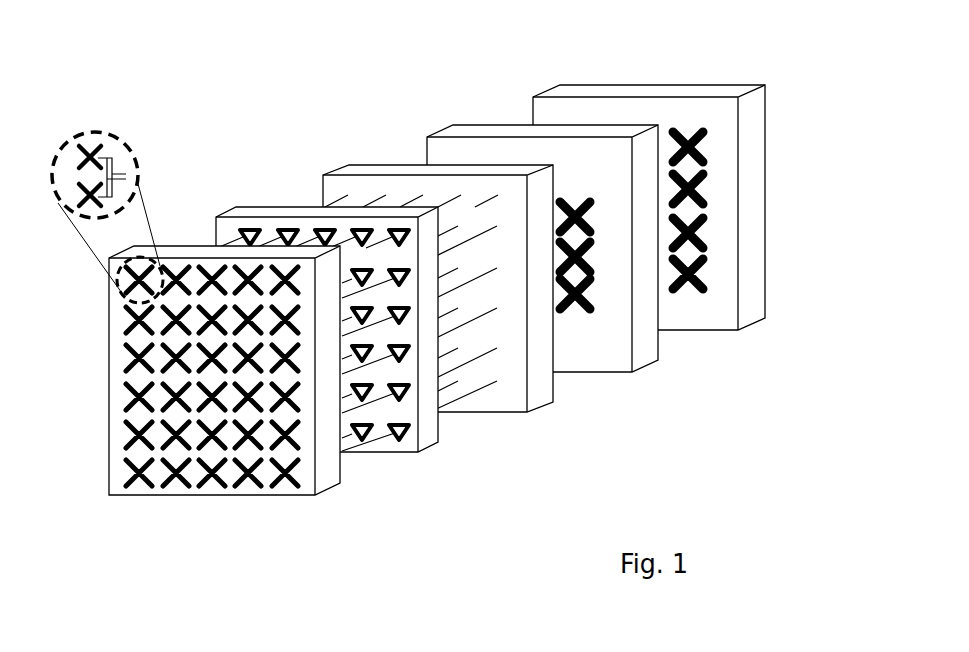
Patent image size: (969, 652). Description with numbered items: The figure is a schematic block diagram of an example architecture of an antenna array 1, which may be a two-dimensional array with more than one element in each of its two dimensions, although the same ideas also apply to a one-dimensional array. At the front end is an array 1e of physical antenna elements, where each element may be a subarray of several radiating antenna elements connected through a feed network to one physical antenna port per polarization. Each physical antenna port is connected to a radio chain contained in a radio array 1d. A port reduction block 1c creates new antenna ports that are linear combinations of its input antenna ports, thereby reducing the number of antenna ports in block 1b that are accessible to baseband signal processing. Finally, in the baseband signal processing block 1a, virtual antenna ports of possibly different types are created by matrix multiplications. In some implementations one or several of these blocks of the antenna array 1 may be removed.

The antenna array 1 is at (152, 46).
The baseband signal processing block 1a is at (643, 92).
The block of antenna ports accessible to baseband signal processing 1b is at (470, 137).
The port reduction block 1c is at (378, 170).
The radio array 1d is at (293, 213).
The array of physical antenna elements 1e is at (210, 257).